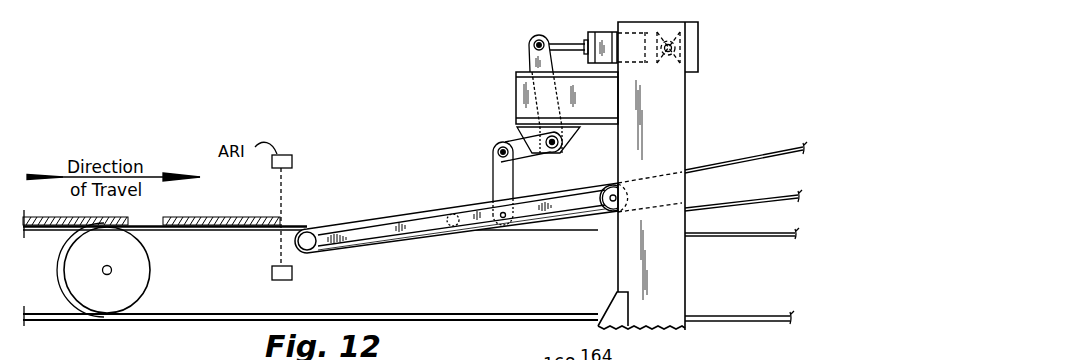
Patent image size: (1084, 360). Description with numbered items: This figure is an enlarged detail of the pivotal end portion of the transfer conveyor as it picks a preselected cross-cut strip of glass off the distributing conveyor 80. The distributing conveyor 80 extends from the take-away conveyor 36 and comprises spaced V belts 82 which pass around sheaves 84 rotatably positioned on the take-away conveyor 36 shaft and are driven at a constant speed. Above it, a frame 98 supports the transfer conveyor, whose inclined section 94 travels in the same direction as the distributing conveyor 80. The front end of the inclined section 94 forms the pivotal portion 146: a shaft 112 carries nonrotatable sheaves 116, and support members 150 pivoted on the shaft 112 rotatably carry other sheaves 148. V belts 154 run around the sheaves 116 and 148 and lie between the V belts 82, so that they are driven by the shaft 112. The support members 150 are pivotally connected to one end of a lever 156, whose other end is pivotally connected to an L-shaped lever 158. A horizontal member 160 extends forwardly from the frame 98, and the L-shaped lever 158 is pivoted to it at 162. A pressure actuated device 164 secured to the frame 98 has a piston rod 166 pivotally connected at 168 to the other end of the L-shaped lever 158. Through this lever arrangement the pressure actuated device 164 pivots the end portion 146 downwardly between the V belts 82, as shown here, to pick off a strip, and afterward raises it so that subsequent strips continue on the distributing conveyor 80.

The take-away conveyor 36 is at (60, 320).
The distributing conveyor 80 is at (509, 322).
The V belts 82 is at (547, 236).
The sheaves 84 is at (148, 258).
The inclined section 94 is at (752, 155).
The frame 98 is at (680, 132).
The shaft 112 is at (607, 183).
The sheaves 116 is at (598, 203).
The pivotal portion 146 is at (431, 243).
The sheaves 148 is at (305, 231).
The support members 150 is at (435, 218).
The V belts 154 is at (575, 225).
The lever 156 is at (492, 171).
The L-shaped lever 158 is at (522, 140).
The horizontal member 160 is at (516, 90).
The pivotal connection 162 is at (559, 147).
The pressure actuated device 164 is at (603, 33).
The piston rod 166 is at (568, 42).
The pivotal connection 168 is at (530, 42).